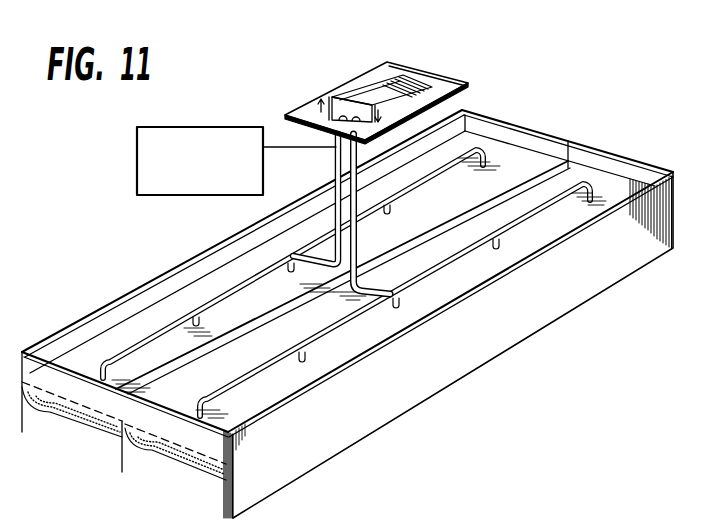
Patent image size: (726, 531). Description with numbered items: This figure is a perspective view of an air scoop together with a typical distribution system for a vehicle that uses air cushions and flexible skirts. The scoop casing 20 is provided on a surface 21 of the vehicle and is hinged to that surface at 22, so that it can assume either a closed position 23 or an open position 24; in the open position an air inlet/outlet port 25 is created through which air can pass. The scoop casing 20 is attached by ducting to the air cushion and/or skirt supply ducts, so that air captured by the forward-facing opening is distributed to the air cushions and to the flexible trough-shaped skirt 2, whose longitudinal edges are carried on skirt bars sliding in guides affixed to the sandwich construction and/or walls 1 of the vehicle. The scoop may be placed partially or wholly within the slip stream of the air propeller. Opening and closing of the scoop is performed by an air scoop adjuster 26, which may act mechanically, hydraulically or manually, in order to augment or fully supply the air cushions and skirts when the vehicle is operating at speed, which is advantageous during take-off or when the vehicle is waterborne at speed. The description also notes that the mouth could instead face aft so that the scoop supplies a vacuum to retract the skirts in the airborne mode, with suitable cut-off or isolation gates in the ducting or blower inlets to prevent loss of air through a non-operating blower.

The walls 1 is at (87, 353).
The flexible trough-shaped skirt 2 is at (88, 417).
The scoop casing 20 is at (382, 90).
The surface 21 is at (448, 87).
The hinge 22 is at (418, 78).
The closed position 23 is at (312, 106).
The open position 24 is at (315, 80).
The air inlet/outlet port 25 is at (327, 97).
The air scoop adjuster 26 is at (236, 161).